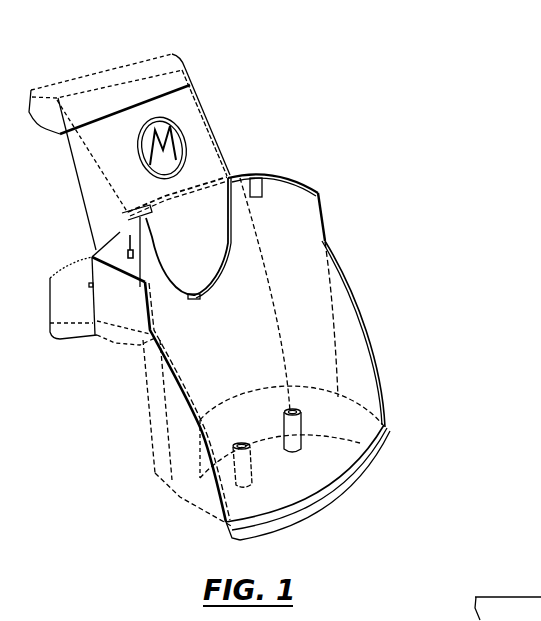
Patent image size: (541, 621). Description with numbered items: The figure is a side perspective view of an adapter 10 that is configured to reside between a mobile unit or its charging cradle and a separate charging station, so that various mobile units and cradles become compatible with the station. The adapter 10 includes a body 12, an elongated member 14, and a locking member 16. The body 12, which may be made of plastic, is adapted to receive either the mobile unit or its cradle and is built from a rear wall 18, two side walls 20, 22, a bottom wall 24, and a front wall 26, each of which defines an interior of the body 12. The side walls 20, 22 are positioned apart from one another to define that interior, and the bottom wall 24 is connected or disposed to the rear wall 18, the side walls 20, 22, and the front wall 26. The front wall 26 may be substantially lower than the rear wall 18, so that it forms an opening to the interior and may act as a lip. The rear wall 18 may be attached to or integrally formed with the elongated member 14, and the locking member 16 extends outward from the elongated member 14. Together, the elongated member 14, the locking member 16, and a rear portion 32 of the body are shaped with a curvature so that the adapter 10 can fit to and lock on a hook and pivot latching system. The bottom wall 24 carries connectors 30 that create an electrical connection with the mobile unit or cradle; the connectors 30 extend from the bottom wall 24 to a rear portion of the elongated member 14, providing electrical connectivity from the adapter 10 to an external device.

The adapter 10 is at (284, 279).
The body 12 is at (302, 345).
The elongated member 14 is at (210, 123).
The locking member 16 is at (140, 68).
The rear wall 18 is at (240, 350).
The side wall 20 is at (300, 268).
The side wall 22 is at (198, 473).
The bottom wall 24 is at (298, 480).
The front wall 26 is at (370, 467).
The connectors 30 is at (298, 432).
The rear portion 32 is at (145, 387).